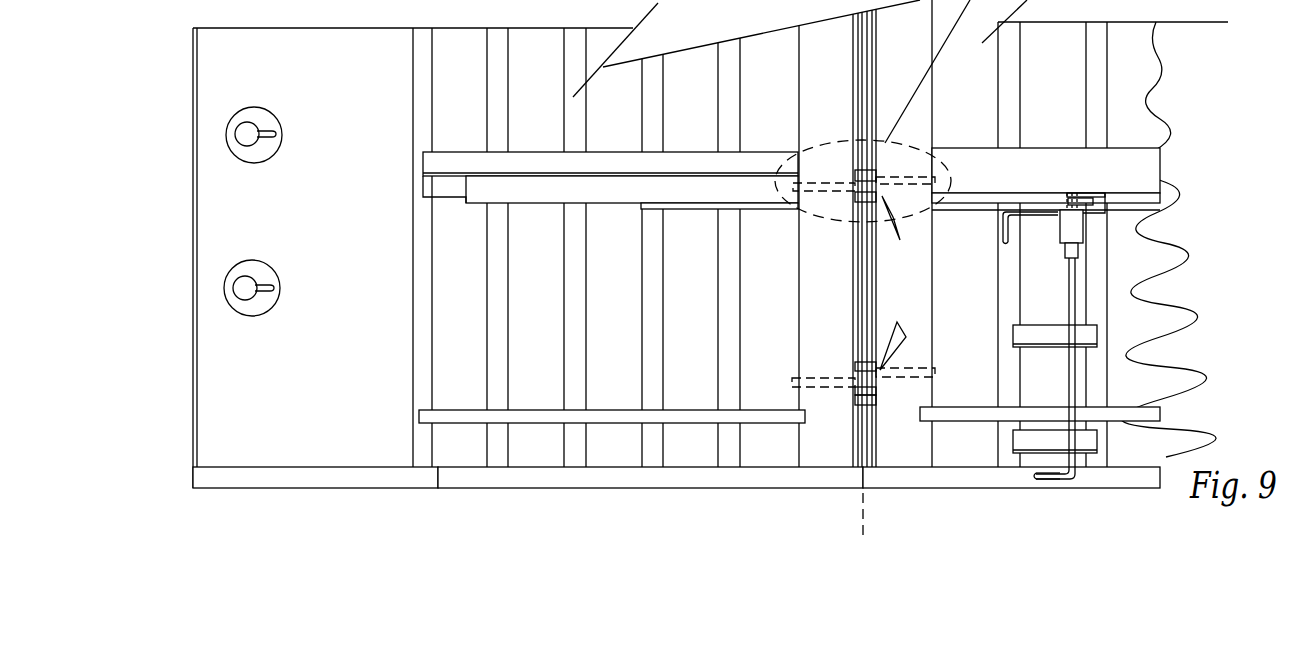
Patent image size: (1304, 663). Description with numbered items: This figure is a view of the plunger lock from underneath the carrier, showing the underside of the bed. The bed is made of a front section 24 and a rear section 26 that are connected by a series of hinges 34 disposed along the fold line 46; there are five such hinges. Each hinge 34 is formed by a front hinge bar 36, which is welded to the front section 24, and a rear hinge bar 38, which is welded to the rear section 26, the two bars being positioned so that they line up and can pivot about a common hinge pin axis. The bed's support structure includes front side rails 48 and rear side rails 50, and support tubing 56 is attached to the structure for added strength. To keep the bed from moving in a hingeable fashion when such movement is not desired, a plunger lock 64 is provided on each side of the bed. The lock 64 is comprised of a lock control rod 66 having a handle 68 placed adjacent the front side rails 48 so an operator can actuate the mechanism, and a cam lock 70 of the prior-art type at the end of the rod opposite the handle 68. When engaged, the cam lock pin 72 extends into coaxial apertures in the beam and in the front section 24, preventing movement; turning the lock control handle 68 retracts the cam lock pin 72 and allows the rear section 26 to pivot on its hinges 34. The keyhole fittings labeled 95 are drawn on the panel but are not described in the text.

The front section 24 is at (955, 452).
The rear section 26 is at (687, 452).
The hinges 34 is at (903, 218).
The front hinge bar 36 is at (912, 157).
The rear hinge bar 38 is at (843, 222).
The fold line 46 is at (860, 513).
The front side rails 48 is at (1125, 473).
The rear side rails 50 is at (775, 478).
The support tubing 56 is at (498, 95).
The lock 64 is at (1070, 290).
The lock control rod 66 is at (1072, 370).
The handle 68 is at (1050, 478).
The cam lock 70 is at (1063, 243).
The cam lock pin 72 is at (1075, 196).
The keyhole lock 95 is at (245, 122).